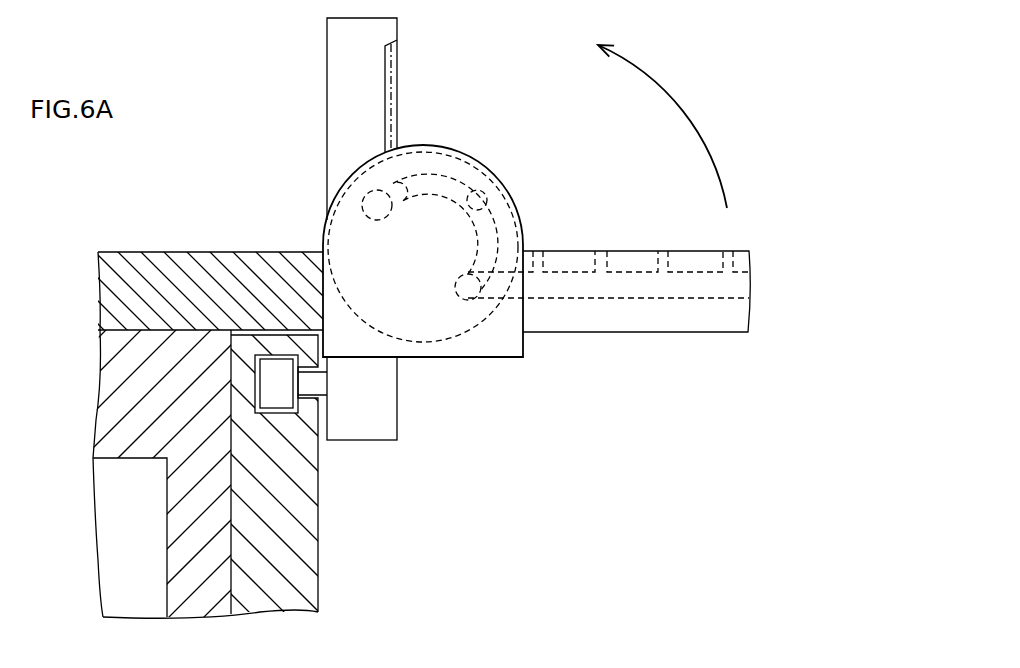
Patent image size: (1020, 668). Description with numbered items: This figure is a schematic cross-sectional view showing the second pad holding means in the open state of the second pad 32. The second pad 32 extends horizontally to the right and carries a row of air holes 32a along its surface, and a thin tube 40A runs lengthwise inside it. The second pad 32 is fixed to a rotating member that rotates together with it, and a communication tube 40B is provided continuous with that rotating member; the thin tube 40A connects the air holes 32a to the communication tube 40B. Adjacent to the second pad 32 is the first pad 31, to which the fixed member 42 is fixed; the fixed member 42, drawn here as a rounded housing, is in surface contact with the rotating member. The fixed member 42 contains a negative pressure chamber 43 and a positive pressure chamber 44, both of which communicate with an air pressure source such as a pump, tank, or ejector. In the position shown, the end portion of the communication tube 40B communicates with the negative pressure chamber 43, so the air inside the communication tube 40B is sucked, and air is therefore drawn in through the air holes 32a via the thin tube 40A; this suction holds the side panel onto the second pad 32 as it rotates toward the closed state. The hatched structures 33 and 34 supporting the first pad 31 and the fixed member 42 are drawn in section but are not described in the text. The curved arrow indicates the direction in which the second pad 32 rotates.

The first pad 31 is at (153, 266).
The second pad 32 is at (665, 322).
The air holes 32a is at (665, 250).
The base member 33 is at (118, 398).
The support column 34 is at (327, 52).
The thin tube 40A is at (567, 298).
The communication tube 40B is at (456, 286).
The fixed member 42 is at (457, 150).
The negative pressure chamber 43 is at (486, 197).
The positive pressure chamber 44 is at (366, 204).